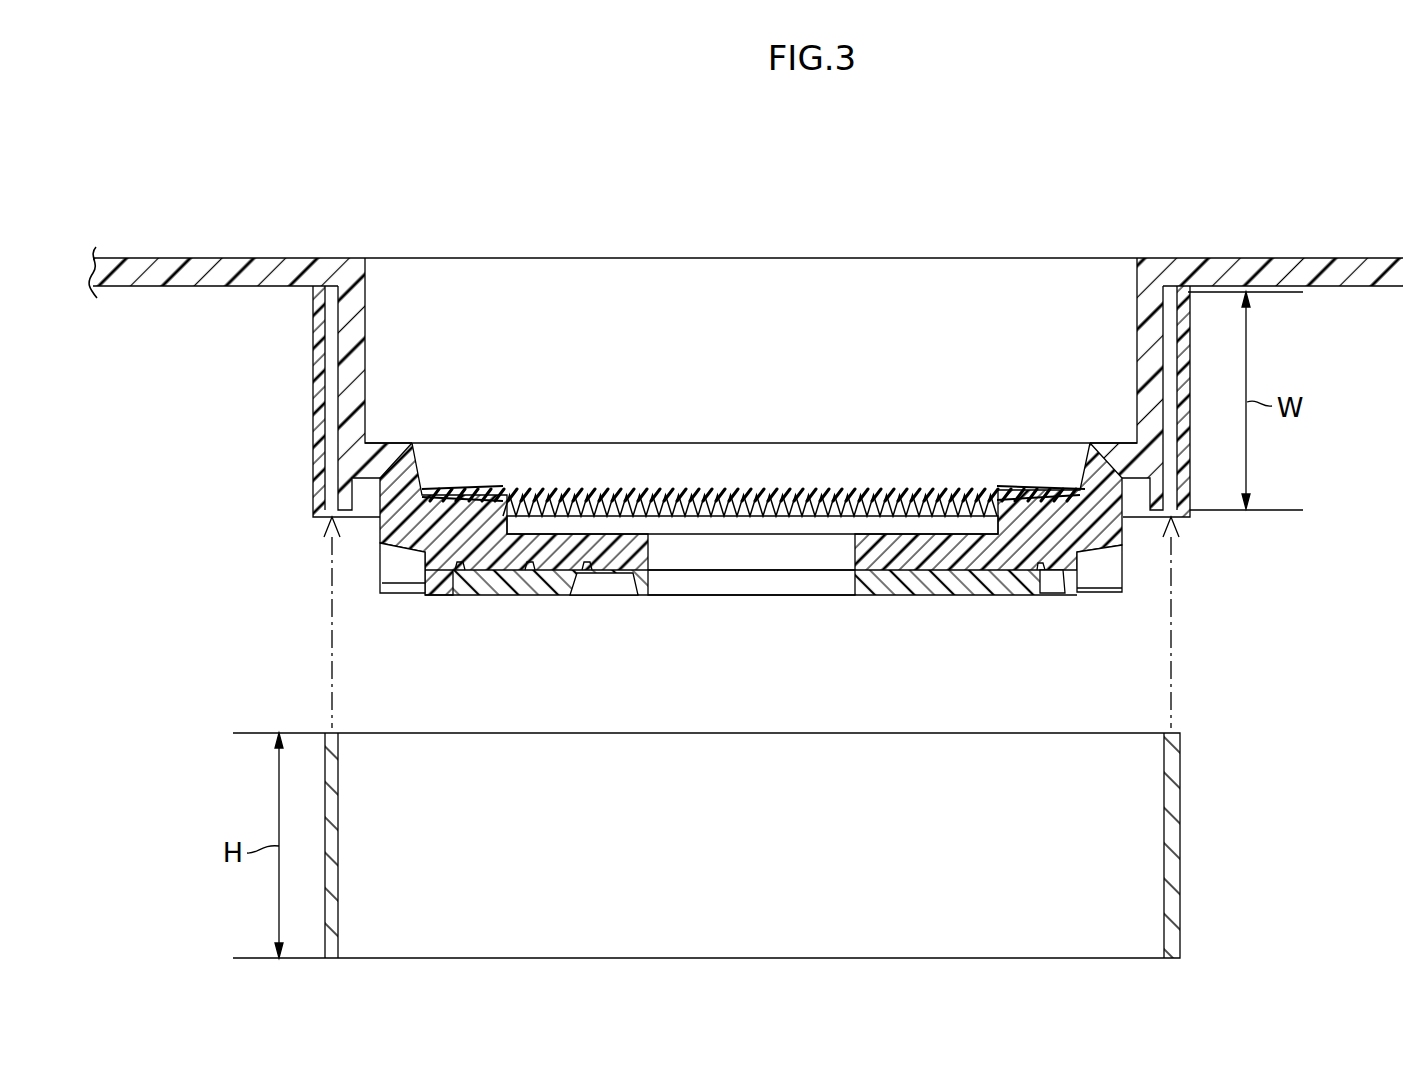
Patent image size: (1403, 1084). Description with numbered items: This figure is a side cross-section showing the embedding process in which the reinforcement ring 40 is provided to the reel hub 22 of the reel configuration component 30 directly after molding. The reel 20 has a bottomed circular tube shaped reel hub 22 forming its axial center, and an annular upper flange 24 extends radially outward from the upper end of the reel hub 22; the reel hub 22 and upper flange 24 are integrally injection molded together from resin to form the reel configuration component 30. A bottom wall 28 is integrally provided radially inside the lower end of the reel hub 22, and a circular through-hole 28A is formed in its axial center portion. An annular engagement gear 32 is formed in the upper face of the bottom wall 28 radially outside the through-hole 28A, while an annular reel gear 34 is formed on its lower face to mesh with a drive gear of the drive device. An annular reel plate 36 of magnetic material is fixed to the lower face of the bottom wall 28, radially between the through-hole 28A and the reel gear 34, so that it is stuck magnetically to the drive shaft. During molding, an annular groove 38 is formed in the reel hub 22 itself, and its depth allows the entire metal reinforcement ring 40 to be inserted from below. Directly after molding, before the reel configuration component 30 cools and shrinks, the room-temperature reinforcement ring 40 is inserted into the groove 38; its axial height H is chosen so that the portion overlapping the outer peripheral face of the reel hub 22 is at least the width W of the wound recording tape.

The reel 20 is at (1184, 213).
The reel hub 22 is at (365, 340).
The upper flange 24 is at (1362, 262).
The bottom wall 28 is at (890, 528).
The through-hole 28A is at (745, 553).
The reel configuration component 30 is at (764, 255).
The engagement gear 32 is at (585, 492).
The reel gear 34 is at (1097, 570).
The reel plate 36 is at (935, 590).
The groove 38 is at (332, 428).
The reinforcement ring 40 is at (1190, 843).